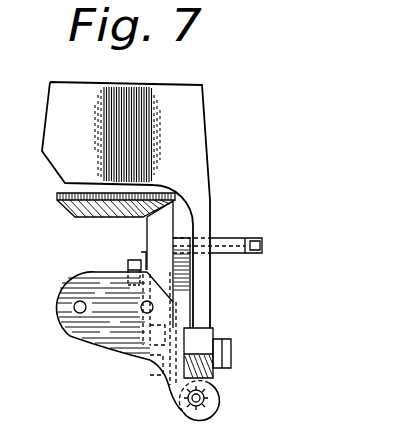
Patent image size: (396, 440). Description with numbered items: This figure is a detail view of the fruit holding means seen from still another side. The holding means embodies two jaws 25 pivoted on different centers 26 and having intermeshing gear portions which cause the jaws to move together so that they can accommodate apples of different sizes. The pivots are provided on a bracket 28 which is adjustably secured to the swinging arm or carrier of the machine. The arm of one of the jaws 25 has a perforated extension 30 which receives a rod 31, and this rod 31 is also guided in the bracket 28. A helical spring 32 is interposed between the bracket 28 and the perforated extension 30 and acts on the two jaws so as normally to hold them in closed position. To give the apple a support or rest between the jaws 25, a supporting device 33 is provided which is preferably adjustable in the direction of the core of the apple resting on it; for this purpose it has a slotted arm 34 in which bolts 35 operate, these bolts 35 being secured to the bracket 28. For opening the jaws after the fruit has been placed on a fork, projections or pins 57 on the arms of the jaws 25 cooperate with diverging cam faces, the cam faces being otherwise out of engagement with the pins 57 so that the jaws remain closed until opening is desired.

The jaws 25 is at (188, 119).
The pivot centers 26 is at (243, 341).
The bracket 28 is at (97, 333).
The extension 30 is at (178, 406).
The rod 31 is at (206, 397).
The helical spring 32 is at (217, 406).
The supporting device 33 is at (122, 196).
The slotted arm 34 is at (163, 237).
The bolts 35 is at (128, 264).
The projections or pins 57 is at (238, 256).